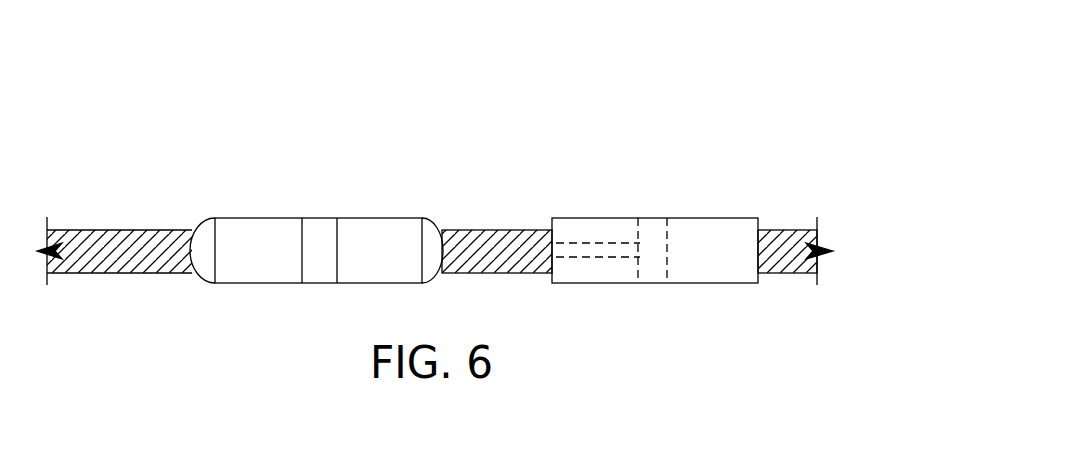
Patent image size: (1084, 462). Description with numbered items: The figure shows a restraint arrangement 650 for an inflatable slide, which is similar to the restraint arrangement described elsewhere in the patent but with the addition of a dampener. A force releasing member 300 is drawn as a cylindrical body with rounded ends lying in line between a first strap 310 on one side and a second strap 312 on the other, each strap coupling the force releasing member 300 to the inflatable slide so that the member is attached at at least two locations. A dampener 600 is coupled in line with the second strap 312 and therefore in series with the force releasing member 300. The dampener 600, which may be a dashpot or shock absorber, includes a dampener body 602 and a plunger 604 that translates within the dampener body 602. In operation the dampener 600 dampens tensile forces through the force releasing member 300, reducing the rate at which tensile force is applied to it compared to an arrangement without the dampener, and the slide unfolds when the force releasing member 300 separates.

The force releasing member 300 is at (312, 218).
The first strap 310 is at (123, 258).
The second strap 312 is at (490, 230).
The dampener 600 is at (714, 161).
The dampener body 602 is at (731, 283).
The plunger 604 is at (653, 270).
The restraint arrangement 650 is at (527, 100).